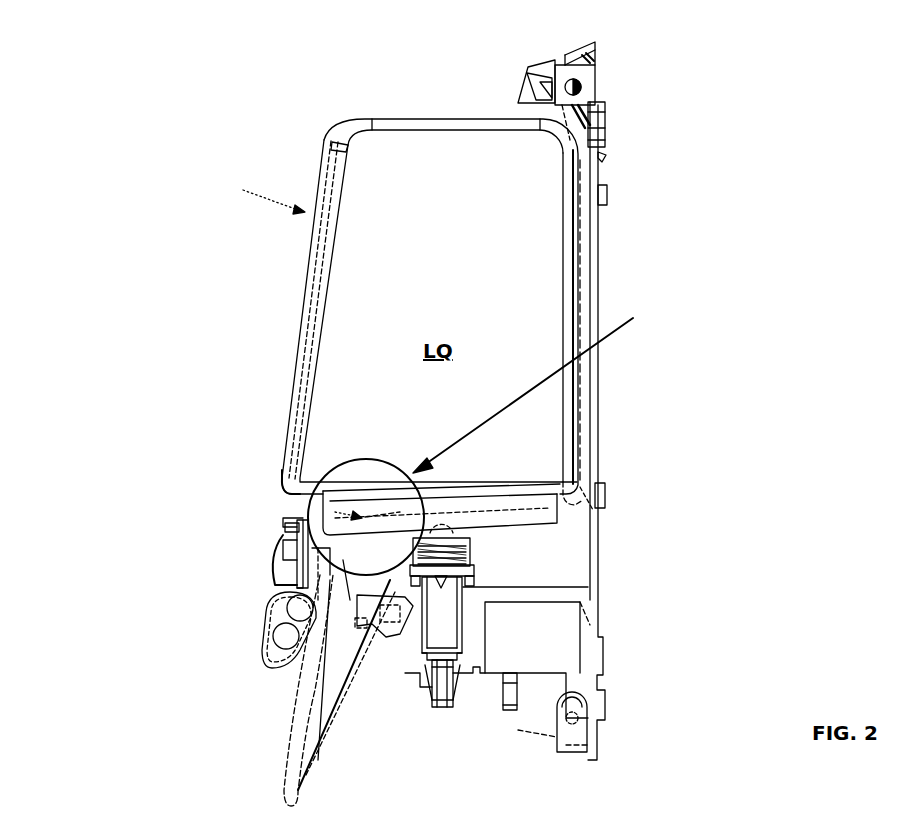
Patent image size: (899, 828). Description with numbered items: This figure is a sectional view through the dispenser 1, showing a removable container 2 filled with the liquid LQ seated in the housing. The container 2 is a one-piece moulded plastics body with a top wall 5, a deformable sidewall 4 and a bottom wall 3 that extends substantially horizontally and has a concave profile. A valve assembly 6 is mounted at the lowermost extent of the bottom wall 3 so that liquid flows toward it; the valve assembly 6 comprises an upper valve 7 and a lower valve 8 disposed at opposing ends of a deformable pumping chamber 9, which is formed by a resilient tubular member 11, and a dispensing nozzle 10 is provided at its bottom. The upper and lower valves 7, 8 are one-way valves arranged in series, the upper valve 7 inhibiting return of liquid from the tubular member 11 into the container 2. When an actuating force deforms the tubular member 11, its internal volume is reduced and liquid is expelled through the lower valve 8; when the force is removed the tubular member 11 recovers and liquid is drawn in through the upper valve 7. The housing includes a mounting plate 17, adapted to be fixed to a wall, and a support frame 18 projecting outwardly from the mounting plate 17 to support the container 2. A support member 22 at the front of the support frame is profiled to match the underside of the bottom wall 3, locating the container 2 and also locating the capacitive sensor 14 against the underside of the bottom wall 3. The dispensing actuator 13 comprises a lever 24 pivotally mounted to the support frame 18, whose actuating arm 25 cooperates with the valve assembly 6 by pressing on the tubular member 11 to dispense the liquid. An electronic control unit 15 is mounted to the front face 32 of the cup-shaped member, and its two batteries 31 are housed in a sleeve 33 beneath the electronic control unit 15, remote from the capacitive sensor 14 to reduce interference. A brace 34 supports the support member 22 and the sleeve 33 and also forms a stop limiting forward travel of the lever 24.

The dispenser 1 is at (138, 232).
The container 2 is at (318, 146).
The bottom wall 3 is at (500, 530).
The sidewall 4 is at (302, 290).
The top wall 5 is at (410, 123).
The valve assembly 6 is at (462, 692).
The upper valve 7 is at (467, 581).
The lower valve 8 is at (450, 672).
The deformable pumping chamber 9 is at (442, 614).
The dispensing nozzle 10 is at (443, 708).
The tubular member 11 is at (447, 608).
The dispensing actuator 13 is at (270, 735).
The capacitive sensor 14 is at (278, 480).
The electronic control unit 15 is at (291, 548).
The mounting plate 17 is at (598, 218).
The support frame 18 is at (572, 532).
The support member 22 is at (343, 598).
The lever 24 is at (302, 710).
The actuating arm 25 is at (397, 630).
The batteries 31 is at (296, 607).
The front face 32 is at (312, 555).
The sleeve 33 is at (270, 629).
The brace 34 is at (341, 542).